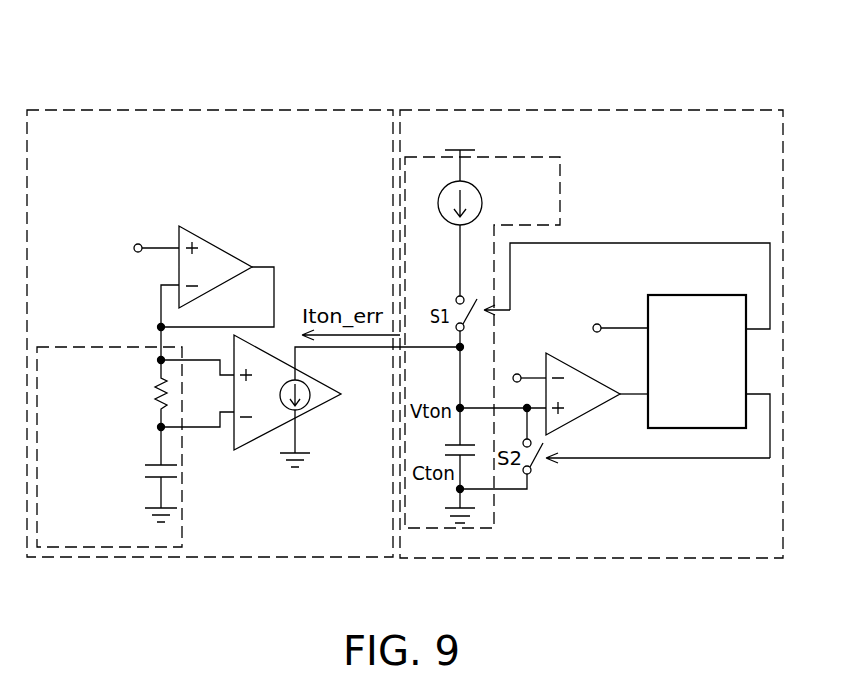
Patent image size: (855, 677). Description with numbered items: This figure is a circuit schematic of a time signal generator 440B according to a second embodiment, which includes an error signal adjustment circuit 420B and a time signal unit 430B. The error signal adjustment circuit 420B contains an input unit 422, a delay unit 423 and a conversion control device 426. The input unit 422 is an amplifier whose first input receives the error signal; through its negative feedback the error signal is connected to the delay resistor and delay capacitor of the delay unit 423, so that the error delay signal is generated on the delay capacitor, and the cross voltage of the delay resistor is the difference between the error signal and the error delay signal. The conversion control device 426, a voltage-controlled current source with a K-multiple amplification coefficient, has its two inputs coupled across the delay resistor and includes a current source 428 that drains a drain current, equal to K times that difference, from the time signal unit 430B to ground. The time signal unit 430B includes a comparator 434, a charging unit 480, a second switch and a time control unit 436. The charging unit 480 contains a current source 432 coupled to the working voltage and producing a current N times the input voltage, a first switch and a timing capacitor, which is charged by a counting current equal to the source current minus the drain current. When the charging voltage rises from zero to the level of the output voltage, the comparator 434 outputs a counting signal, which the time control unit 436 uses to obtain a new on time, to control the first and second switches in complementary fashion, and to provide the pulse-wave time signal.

The error signal adjustment circuit 420B is at (218, 111).
The time signal unit 430B is at (610, 112).
The charging unit 480 is at (563, 185).
The current source 432 is at (474, 184).
The input unit 422 is at (217, 243).
The delay unit 423 is at (182, 527).
The conversion control device 426 is at (253, 445).
The current source 428 is at (310, 399).
The comparator 434 is at (568, 425).
The time control unit 436 is at (675, 295).
The time signal generator 440B is at (783, 607).